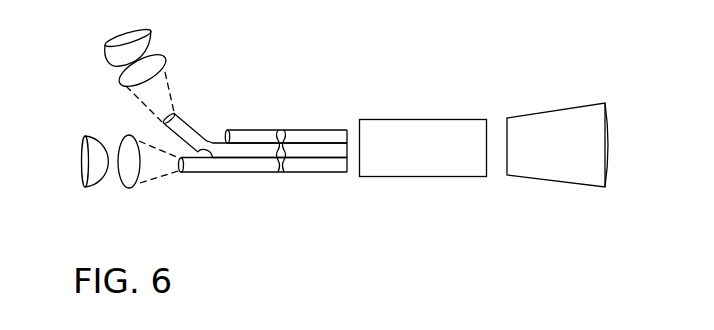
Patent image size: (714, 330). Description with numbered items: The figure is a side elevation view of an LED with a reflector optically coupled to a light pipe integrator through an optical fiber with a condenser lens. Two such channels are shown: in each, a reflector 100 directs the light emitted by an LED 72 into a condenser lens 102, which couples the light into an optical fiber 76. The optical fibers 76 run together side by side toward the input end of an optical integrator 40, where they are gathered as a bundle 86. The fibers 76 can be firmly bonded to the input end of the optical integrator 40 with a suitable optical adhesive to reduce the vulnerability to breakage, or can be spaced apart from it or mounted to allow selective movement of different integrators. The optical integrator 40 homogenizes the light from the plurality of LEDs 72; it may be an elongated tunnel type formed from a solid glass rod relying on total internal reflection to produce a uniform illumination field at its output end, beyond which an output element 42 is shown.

The LED 72 is at (118, 33).
The reflector 100 is at (147, 33).
The condenser lens 102 is at (166, 72).
The optical fiber 76 is at (302, 148).
The fiber bundle 86 is at (295, 196).
The optical integrator 40 is at (420, 119).
The projection lens 42 is at (556, 110).